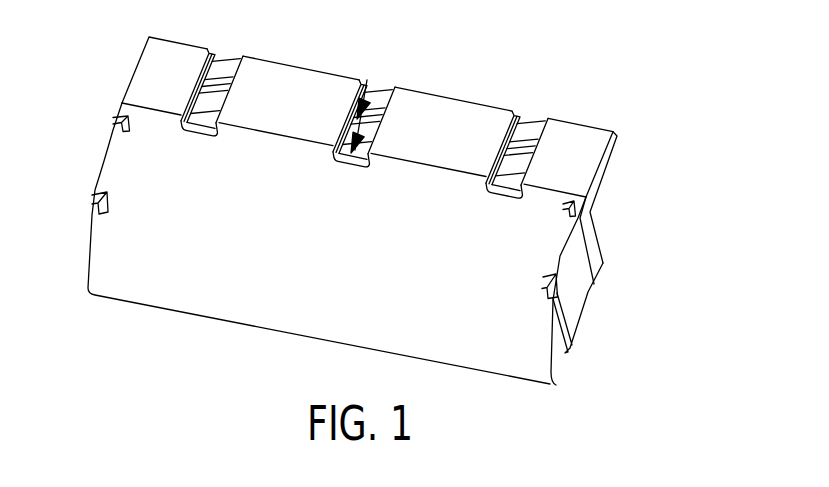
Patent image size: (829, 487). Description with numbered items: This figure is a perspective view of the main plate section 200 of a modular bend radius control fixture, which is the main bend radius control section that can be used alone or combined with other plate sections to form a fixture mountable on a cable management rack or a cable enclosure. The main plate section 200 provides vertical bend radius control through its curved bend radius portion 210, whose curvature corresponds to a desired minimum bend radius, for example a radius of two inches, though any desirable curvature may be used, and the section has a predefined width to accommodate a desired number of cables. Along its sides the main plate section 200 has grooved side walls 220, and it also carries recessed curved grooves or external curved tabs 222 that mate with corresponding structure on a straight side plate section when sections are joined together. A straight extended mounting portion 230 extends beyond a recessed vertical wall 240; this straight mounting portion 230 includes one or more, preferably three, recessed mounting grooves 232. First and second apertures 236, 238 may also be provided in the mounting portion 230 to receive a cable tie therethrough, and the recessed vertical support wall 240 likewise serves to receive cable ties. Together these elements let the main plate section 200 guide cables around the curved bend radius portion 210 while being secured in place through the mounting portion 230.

The main plate section 200 is at (363, 202).
The curved bend radius portion 210 is at (324, 202).
The grooved side walls 220 is at (557, 300).
The external curved tabs 222 is at (547, 282).
The straight extended mounting portion 230 is at (398, 109).
The recessed mounting grooves 232 is at (528, 126).
The first aperture 236 is at (376, 92).
The second aperture 238 is at (365, 96).
The recessed vertical wall 240 is at (595, 213).